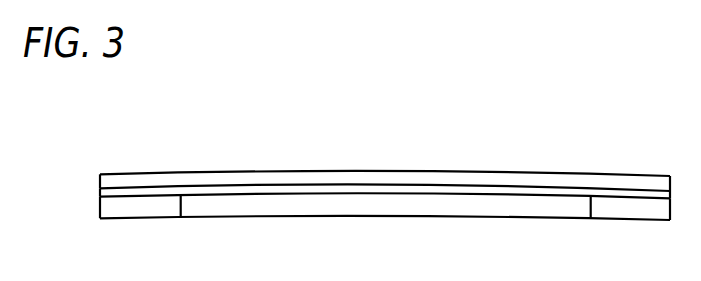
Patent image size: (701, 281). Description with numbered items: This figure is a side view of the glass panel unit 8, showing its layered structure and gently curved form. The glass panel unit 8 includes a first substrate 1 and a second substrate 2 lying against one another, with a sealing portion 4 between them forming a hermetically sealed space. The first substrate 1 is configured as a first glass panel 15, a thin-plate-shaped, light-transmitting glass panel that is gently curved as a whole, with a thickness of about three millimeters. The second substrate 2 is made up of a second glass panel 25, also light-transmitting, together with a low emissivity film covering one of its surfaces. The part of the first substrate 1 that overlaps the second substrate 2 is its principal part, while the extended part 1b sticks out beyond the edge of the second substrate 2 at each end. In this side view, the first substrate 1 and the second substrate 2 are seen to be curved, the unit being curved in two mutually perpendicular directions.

The first substrate 1 is at (362, 217).
The extended part 1b is at (273, 207).
The first glass panel 15 is at (445, 203).
The second substrate 2 is at (357, 171).
The second glass panel 25 is at (435, 178).
The sealing portion 4 is at (493, 191).
The glass panel unit 8 is at (282, 171).